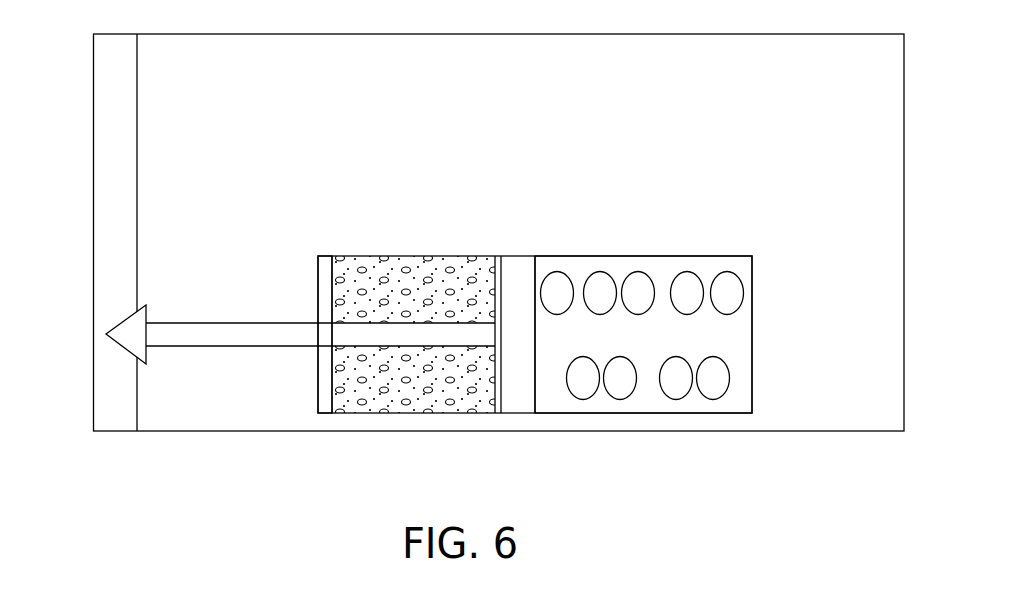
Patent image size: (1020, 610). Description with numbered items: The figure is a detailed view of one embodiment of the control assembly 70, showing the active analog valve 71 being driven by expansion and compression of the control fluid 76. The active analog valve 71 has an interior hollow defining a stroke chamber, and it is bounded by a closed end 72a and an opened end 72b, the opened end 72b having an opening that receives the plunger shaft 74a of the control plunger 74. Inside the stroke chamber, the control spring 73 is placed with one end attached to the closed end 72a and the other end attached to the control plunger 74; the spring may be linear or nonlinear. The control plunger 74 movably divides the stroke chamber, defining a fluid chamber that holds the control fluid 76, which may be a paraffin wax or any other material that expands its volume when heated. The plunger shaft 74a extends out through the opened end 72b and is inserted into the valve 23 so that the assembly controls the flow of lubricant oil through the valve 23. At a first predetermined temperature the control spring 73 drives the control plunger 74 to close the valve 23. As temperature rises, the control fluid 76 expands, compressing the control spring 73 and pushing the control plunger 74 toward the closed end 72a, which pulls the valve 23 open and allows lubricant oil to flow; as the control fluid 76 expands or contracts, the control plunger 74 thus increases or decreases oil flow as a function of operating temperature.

The valve 23 is at (107, 163).
The control assembly 70 is at (115, 352).
The active analog valve 71 is at (323, 256).
The closed end 72a is at (752, 335).
The opened end 72b is at (318, 349).
The control spring 73 is at (640, 278).
The control plunger 74 is at (517, 270).
The plunger shaft 74a is at (199, 328).
The control fluid 76 is at (407, 268).